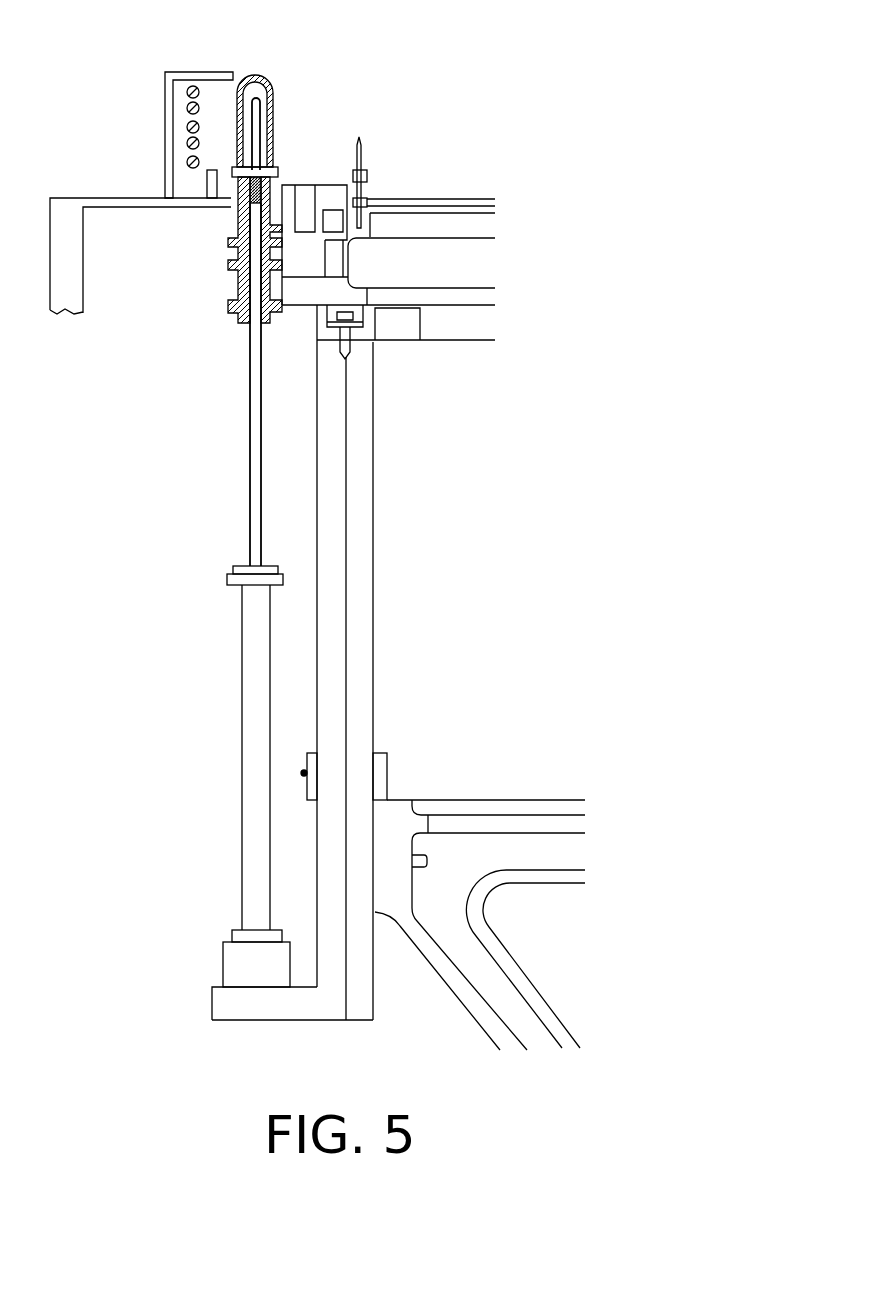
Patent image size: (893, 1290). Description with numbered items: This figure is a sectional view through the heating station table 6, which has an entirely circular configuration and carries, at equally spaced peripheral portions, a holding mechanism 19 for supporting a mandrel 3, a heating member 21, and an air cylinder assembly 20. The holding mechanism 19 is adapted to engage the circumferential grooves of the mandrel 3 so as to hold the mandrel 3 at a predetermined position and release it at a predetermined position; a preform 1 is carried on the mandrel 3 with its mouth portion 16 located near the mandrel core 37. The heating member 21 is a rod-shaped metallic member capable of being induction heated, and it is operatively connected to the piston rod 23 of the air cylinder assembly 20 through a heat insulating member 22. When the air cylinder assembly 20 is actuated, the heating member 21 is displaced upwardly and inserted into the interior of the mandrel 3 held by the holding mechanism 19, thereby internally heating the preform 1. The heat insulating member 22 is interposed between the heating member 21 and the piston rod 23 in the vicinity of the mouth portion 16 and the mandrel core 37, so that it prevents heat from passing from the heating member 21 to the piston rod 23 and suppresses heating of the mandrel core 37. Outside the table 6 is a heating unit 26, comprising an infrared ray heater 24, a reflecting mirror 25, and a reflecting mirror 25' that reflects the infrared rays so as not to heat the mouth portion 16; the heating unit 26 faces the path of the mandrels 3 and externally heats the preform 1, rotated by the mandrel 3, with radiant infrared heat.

The preform 1 is at (272, 112).
The mandrel 3 is at (232, 302).
The heating station table 6 is at (483, 802).
The mouth portion 16 is at (278, 178).
The holding mechanism 19 is at (340, 186).
The air cylinder assembly 20 is at (243, 792).
The heating member 21 is at (250, 78).
The heat insulating member 22 is at (238, 200).
The piston rod 23 is at (250, 498).
The infrared ray heater 24 is at (195, 86).
The reflecting mirror 25 is at (158, 118).
The reflecting mirror 25' is at (133, 178).
The heating unit 26 is at (165, 132).
The mandrel core 37 is at (292, 186).